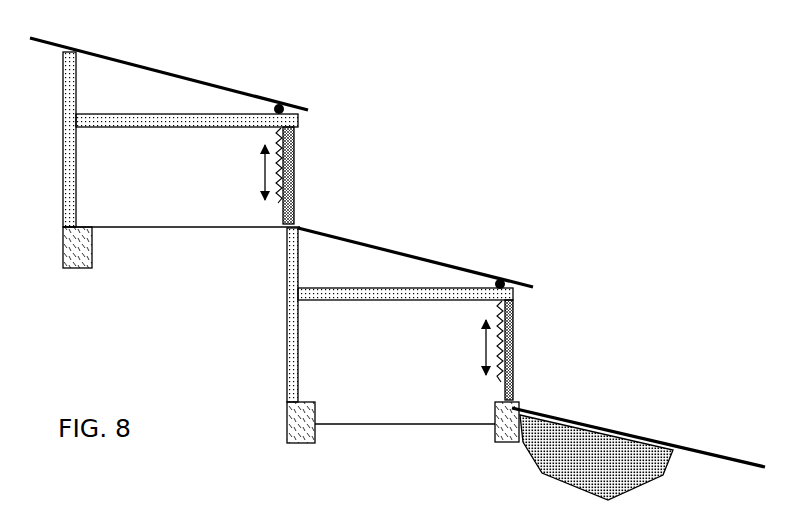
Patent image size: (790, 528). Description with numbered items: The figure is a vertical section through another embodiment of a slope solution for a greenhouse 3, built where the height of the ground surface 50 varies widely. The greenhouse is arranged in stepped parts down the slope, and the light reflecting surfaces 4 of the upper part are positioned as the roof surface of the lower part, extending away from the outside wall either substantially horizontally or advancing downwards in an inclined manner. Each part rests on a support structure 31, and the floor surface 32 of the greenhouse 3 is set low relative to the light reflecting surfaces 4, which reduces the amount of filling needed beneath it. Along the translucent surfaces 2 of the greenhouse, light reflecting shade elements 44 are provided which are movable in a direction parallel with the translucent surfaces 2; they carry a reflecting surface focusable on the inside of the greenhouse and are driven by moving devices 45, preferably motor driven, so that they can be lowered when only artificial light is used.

The greenhouse 3 is at (242, 77).
The light reflecting surfaces 4 is at (332, 230).
The moving devices 45 is at (508, 278).
The light reflecting shade elements 44 is at (510, 297).
The translucent surfaces 2 is at (513, 352).
The floor surface 32 is at (417, 424).
The support structure 31 is at (497, 443).
The ground surface 50 is at (645, 468).